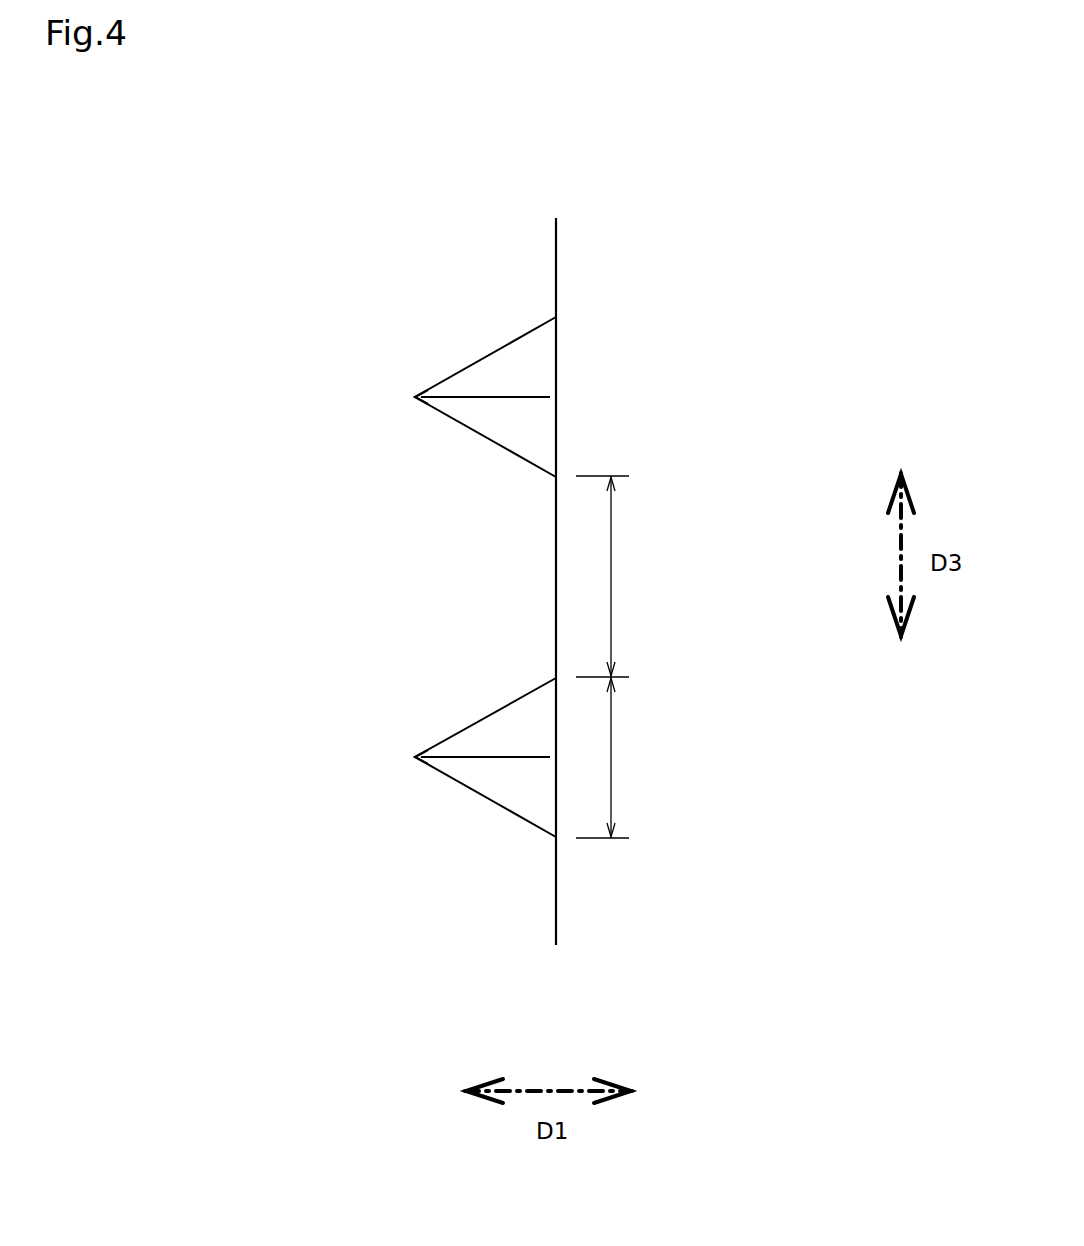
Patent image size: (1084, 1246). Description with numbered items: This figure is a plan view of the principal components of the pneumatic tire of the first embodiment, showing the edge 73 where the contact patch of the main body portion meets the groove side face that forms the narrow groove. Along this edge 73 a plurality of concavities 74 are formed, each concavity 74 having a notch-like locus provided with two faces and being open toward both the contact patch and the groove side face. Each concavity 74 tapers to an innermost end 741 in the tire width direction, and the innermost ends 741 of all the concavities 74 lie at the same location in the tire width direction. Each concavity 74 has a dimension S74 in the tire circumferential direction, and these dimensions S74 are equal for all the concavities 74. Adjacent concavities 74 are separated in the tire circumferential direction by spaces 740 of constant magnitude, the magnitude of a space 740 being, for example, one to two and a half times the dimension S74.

The edge 73 is at (557, 257).
The concavity 74 is at (525, 365).
The innermost end in tire width direction of concavity 741 is at (414, 395).
The space 740 is at (626, 576).
The dimension in tire circumferential direction of concavity S74 is at (626, 758).